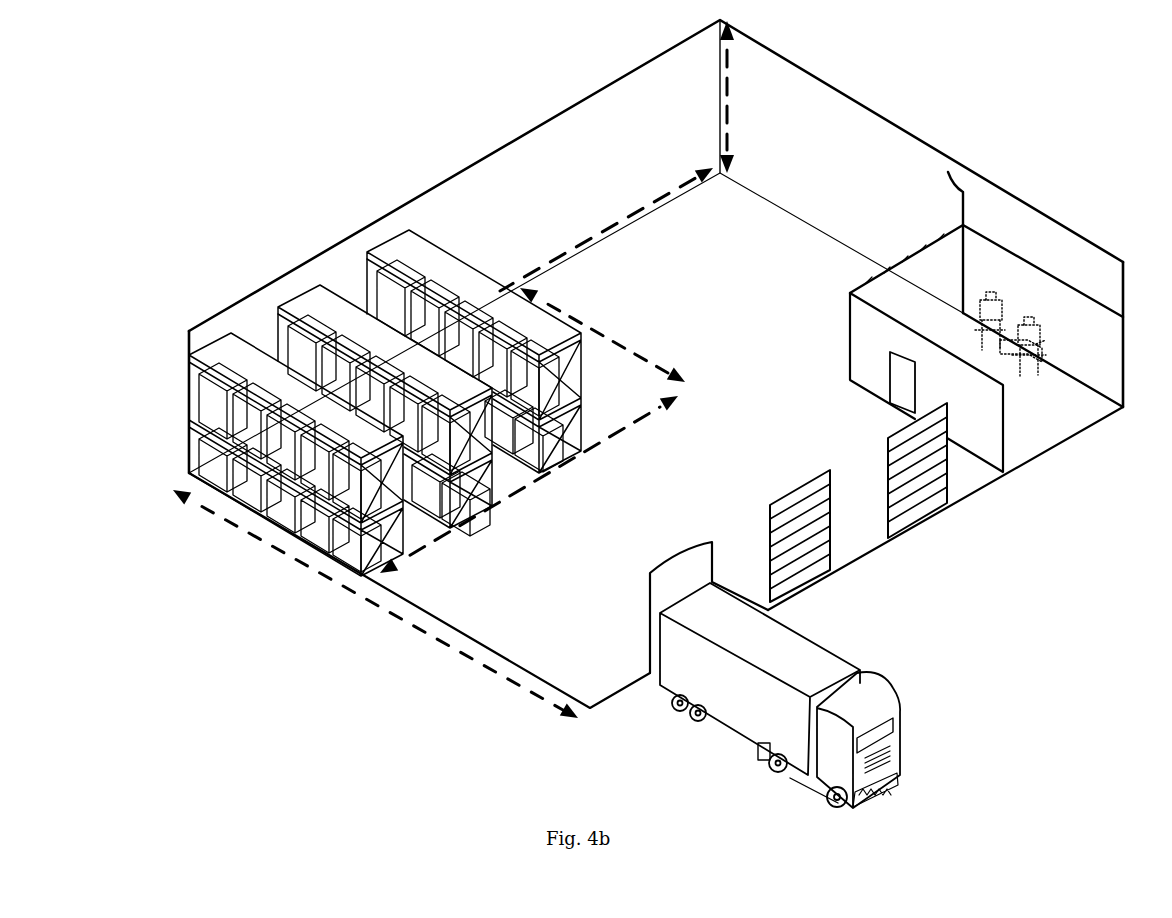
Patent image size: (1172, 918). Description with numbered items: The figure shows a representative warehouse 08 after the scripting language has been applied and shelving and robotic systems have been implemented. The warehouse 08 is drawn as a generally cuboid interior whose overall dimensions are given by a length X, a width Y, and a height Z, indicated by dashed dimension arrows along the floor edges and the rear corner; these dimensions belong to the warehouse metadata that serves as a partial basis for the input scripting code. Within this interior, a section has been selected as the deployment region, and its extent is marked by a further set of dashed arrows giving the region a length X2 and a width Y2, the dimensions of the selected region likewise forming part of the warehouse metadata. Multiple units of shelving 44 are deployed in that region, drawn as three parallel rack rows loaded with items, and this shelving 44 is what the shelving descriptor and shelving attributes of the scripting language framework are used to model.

The warehouse 08 is at (911, 61).
The shelving 44 is at (540, 453).
The length X is at (375, 604).
The width Y is at (606, 229).
The height Z is at (732, 97).
The length of deployment region X2 is at (602, 335).
The width of deployment region Y2 is at (529, 484).